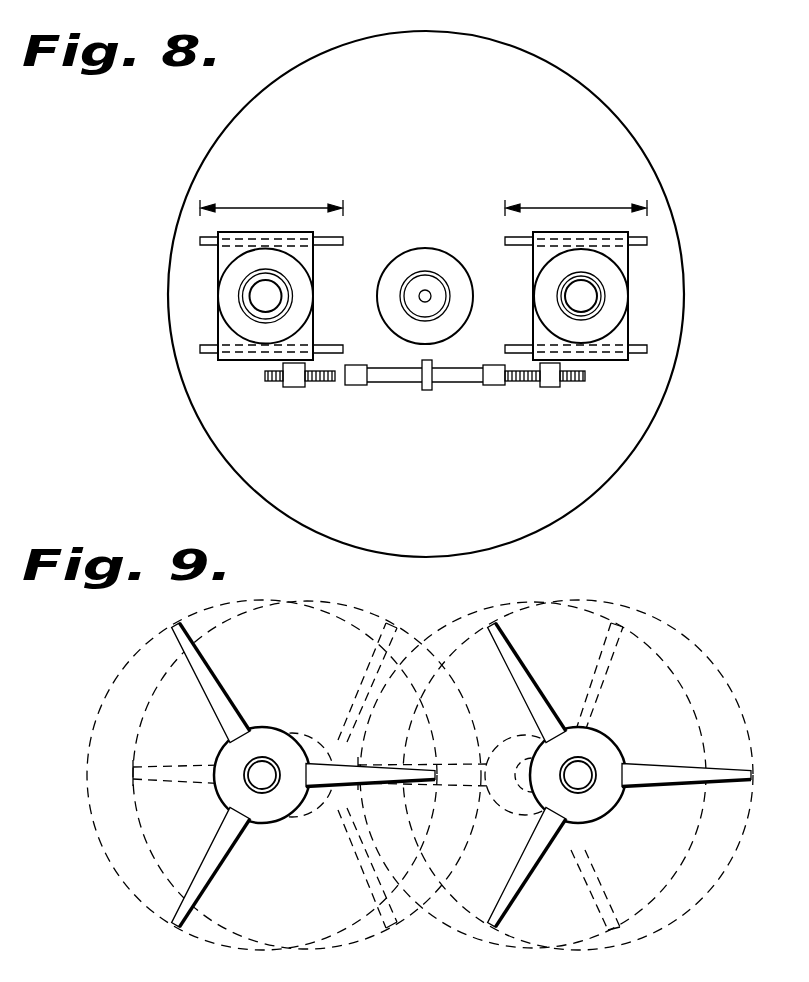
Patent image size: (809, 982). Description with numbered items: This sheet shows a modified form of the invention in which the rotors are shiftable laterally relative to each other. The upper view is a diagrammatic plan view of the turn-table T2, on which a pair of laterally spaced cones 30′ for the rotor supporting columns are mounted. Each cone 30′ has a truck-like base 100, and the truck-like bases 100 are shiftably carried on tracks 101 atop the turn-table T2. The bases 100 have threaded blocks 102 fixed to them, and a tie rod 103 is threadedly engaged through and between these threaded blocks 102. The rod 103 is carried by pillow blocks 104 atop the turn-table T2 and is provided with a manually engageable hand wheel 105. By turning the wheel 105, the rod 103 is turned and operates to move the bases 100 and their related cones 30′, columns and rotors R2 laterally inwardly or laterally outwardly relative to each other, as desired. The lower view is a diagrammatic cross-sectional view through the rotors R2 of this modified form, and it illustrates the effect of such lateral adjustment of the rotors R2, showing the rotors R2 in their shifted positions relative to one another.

In FIG. 8, the turn-table T2 is at (602, 104).
In FIG. 8, the truck-like base 100 is at (218, 257).
In FIG. 8, the cone 30′ is at (224, 296).
In FIG. 8, the track 101 is at (202, 352).
In FIG. 8, the threaded block 102 is at (292, 389).
In FIG. 8, the tie rod 103 is at (336, 386).
In FIG. 8, the pillow block 104 is at (357, 388).
In FIG. 8, the hand wheel 105 is at (428, 392).
In FIG. 9, the rotor R2 is at (640, 830).